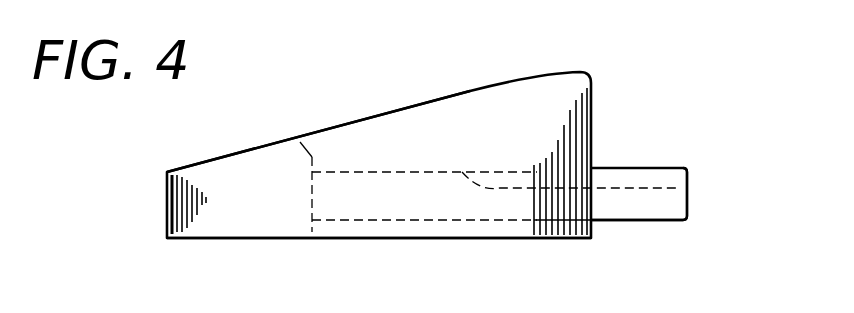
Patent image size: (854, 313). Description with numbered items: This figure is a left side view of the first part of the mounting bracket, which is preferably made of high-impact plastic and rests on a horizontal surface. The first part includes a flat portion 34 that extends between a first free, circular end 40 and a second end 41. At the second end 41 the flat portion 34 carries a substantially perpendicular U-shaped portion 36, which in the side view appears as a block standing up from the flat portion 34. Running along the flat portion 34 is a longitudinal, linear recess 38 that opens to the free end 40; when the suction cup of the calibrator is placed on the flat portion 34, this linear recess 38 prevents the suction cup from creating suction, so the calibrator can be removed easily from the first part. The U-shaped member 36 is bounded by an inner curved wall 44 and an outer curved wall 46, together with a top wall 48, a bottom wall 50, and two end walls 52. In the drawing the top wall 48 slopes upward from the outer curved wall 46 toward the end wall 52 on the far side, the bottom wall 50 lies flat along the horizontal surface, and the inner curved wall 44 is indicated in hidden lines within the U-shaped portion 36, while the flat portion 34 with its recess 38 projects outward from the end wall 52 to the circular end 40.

The flat portion 34 is at (645, 221).
The U-shaped portion 36 is at (476, 108).
The longitudinal, linear recess 38 is at (633, 178).
The first free, circular end 40 is at (688, 196).
The second end 41 is at (312, 198).
The inner curved wall 44 is at (312, 157).
The outer curved wall 46 is at (167, 202).
The top wall 48 is at (262, 148).
The bottom wall 50 is at (303, 239).
The end walls 52 is at (592, 100).